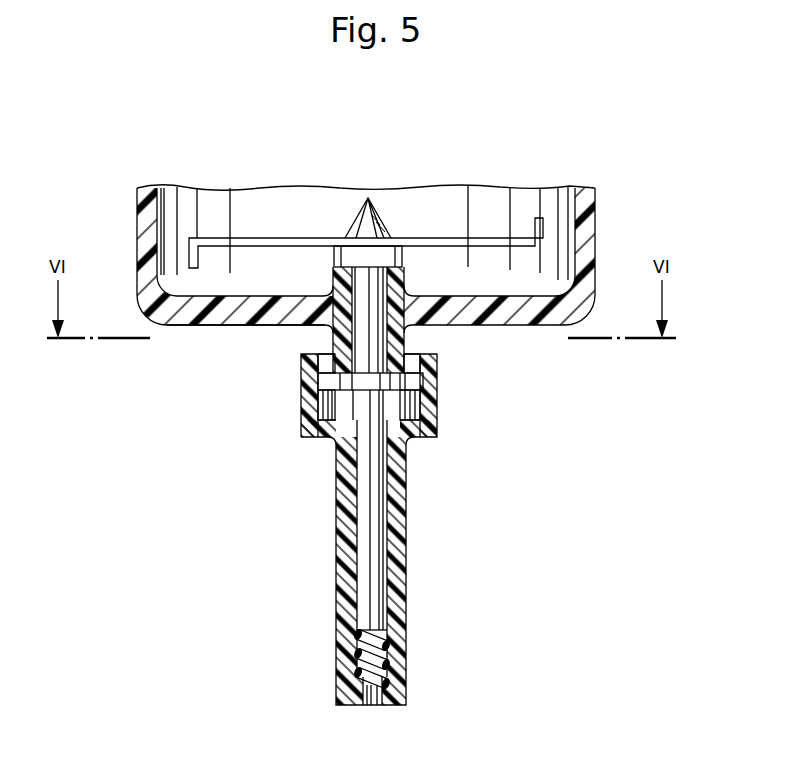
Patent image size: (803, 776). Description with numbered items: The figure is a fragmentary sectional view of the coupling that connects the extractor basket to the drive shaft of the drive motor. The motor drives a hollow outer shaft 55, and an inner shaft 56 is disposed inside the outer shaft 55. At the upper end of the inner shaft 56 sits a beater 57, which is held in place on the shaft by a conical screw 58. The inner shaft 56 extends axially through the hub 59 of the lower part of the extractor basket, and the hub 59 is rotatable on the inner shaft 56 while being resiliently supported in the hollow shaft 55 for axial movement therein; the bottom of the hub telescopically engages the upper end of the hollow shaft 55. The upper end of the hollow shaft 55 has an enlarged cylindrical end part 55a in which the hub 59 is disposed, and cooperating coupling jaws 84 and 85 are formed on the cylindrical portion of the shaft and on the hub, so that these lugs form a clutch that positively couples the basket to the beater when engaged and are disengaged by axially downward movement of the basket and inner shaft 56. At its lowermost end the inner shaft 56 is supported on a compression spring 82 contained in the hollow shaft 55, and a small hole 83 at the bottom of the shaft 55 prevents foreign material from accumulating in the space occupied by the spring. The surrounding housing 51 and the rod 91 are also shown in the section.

The housing 51 is at (588, 248).
The outer shaft 55 is at (398, 622).
The enlarged cylindrical end part 55a is at (434, 426).
The inner shaft 56 is at (360, 282).
The beater 57 is at (263, 240).
The conical screw 58 is at (378, 238).
The hub 59 is at (330, 327).
The compression spring 82 is at (386, 663).
The small hole 83 is at (384, 707).
The coupling jaw 84 is at (413, 358).
The coupling jaw 85 is at (312, 378).
The actuating rod 91 is at (375, 536).